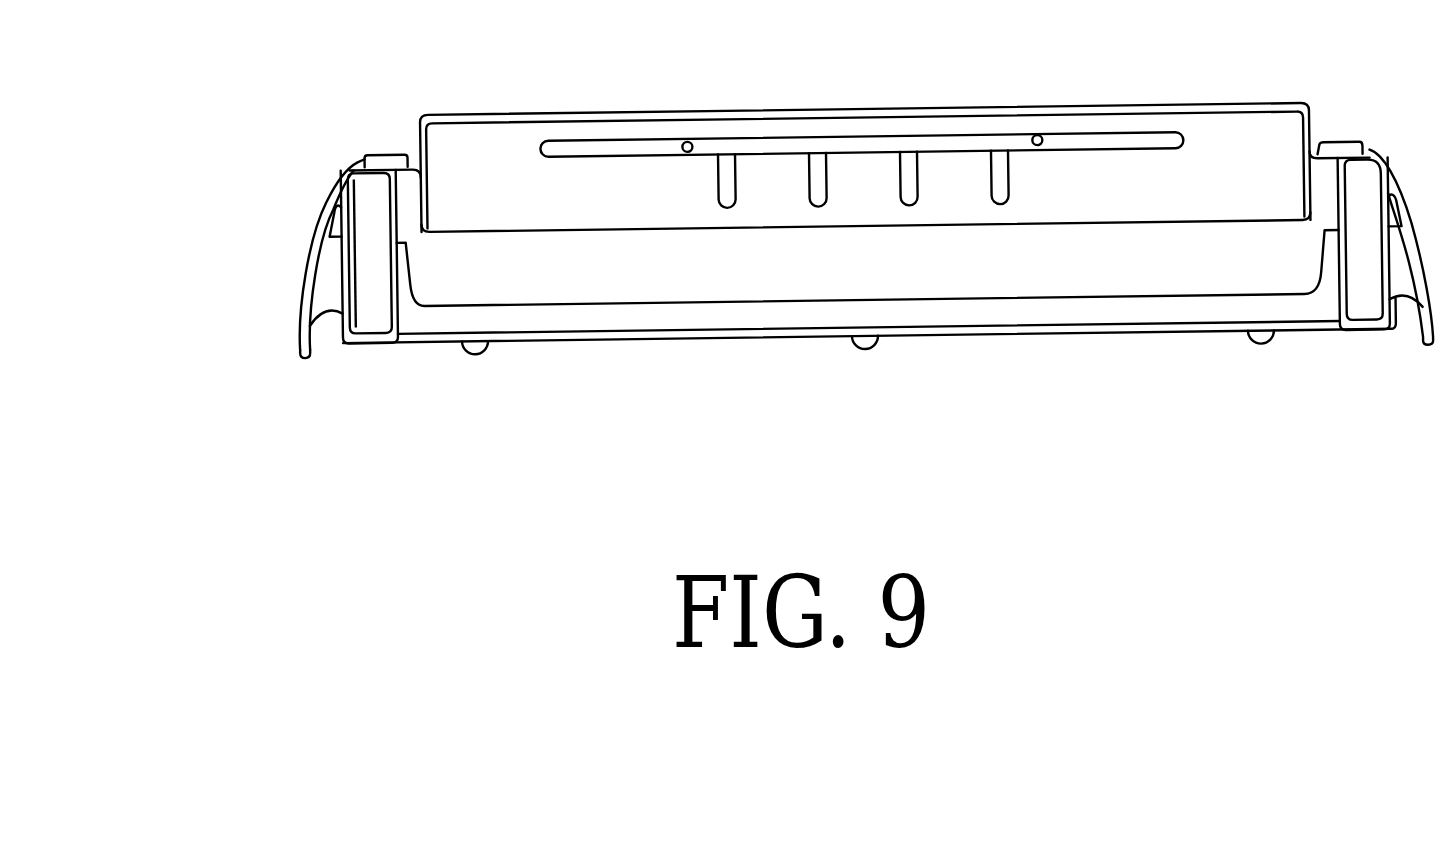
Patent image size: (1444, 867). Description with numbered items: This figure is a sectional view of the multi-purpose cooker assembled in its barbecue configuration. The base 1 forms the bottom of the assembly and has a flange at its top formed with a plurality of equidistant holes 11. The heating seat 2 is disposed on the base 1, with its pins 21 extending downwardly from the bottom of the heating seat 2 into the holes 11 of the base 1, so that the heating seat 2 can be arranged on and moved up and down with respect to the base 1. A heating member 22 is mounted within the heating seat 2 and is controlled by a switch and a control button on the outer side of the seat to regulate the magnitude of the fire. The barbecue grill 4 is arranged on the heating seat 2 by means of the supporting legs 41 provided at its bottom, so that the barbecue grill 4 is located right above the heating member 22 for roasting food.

The base 1 is at (313, 327).
The heating seat 2 is at (335, 192).
The barbecue grill 4 is at (1100, 110).
The holes 11 is at (437, 323).
The pins 21 is at (365, 310).
The heating member 22 is at (763, 145).
The supporting legs 41 is at (1312, 130).